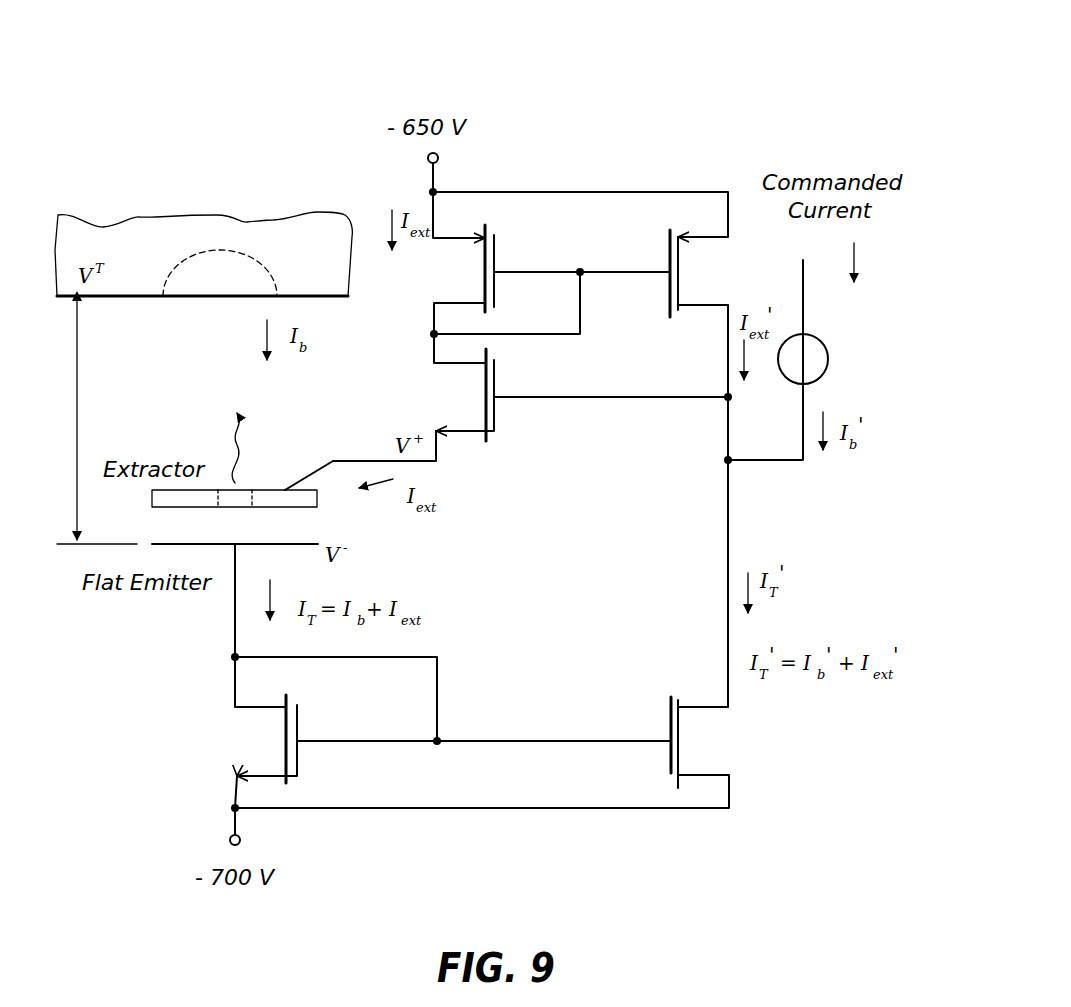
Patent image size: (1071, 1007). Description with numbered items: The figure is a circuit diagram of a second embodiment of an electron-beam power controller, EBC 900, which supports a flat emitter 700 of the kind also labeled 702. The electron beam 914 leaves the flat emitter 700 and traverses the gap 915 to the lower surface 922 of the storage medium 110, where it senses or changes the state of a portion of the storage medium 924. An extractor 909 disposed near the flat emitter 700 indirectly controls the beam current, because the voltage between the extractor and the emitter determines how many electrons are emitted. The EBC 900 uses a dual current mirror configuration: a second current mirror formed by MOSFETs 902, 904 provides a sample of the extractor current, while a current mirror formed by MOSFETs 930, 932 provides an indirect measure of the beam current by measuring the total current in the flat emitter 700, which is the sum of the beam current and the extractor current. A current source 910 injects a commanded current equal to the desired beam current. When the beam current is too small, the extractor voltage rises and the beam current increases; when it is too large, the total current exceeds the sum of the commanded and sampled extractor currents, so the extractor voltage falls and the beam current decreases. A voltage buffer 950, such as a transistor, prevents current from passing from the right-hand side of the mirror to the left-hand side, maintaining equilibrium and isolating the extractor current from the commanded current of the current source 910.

The EBC 900 is at (662, 100).
The storage medium 110 is at (182, 222).
The target / anode 702 is at (202, 244).
The portion of the storage medium 924 is at (235, 273).
The lower surface 922 is at (125, 299).
The gap 915 is at (97, 422).
The electron beam 914 is at (243, 427).
The flat emitter 700 is at (158, 540).
The extractor 909 is at (302, 508).
The MOSFET 902 is at (494, 252).
The MOSFET 904 is at (668, 240).
The voltage buffer 950 is at (495, 378).
The current source 910 is at (810, 336).
The MOSFET 930 is at (296, 726).
The MOSFET 932 is at (670, 722).